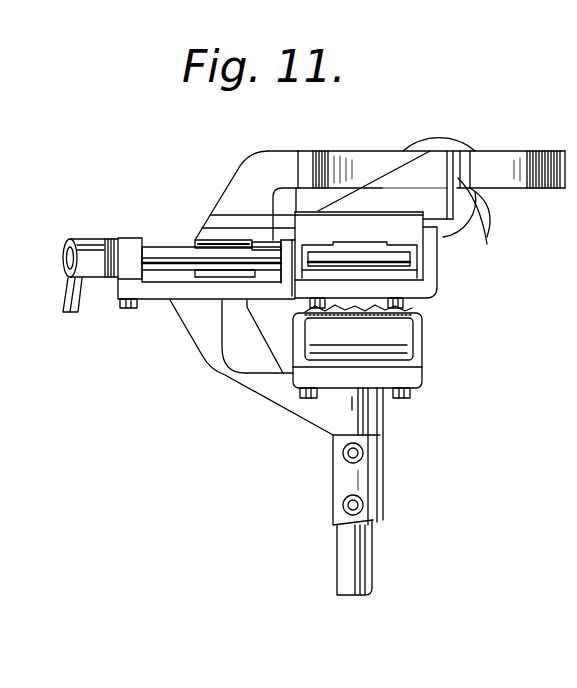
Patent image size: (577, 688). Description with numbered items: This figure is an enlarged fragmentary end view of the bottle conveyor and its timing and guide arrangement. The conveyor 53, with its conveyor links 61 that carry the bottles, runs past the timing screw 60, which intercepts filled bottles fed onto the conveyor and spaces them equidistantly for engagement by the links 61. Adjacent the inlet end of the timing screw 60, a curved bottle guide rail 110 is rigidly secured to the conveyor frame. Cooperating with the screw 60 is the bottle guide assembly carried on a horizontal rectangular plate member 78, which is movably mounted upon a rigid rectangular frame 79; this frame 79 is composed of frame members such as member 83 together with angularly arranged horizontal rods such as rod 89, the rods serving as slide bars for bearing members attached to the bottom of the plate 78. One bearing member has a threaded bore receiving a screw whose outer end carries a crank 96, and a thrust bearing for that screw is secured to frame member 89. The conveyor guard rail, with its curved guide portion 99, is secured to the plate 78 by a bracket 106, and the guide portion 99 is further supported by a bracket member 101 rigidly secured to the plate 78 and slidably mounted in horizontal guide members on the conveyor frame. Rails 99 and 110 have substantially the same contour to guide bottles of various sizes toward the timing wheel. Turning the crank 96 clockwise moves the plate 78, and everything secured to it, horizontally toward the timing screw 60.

The bracket 106 is at (274, 160).
The bracket member 101 is at (413, 178).
The timing screw 60 is at (456, 141).
The curved bottle guide rail 110 is at (556, 190).
The curved guide portion 99 is at (471, 218).
The conveyor 53 is at (438, 268).
The conveyor links 61 is at (397, 272).
The rigid rectangular frame 79 is at (128, 244).
The horizontal rod 89 is at (160, 253).
The horizontal rectangular plate member 78 is at (204, 231).
The crank 96 is at (68, 293).
The frame member 83 is at (208, 342).